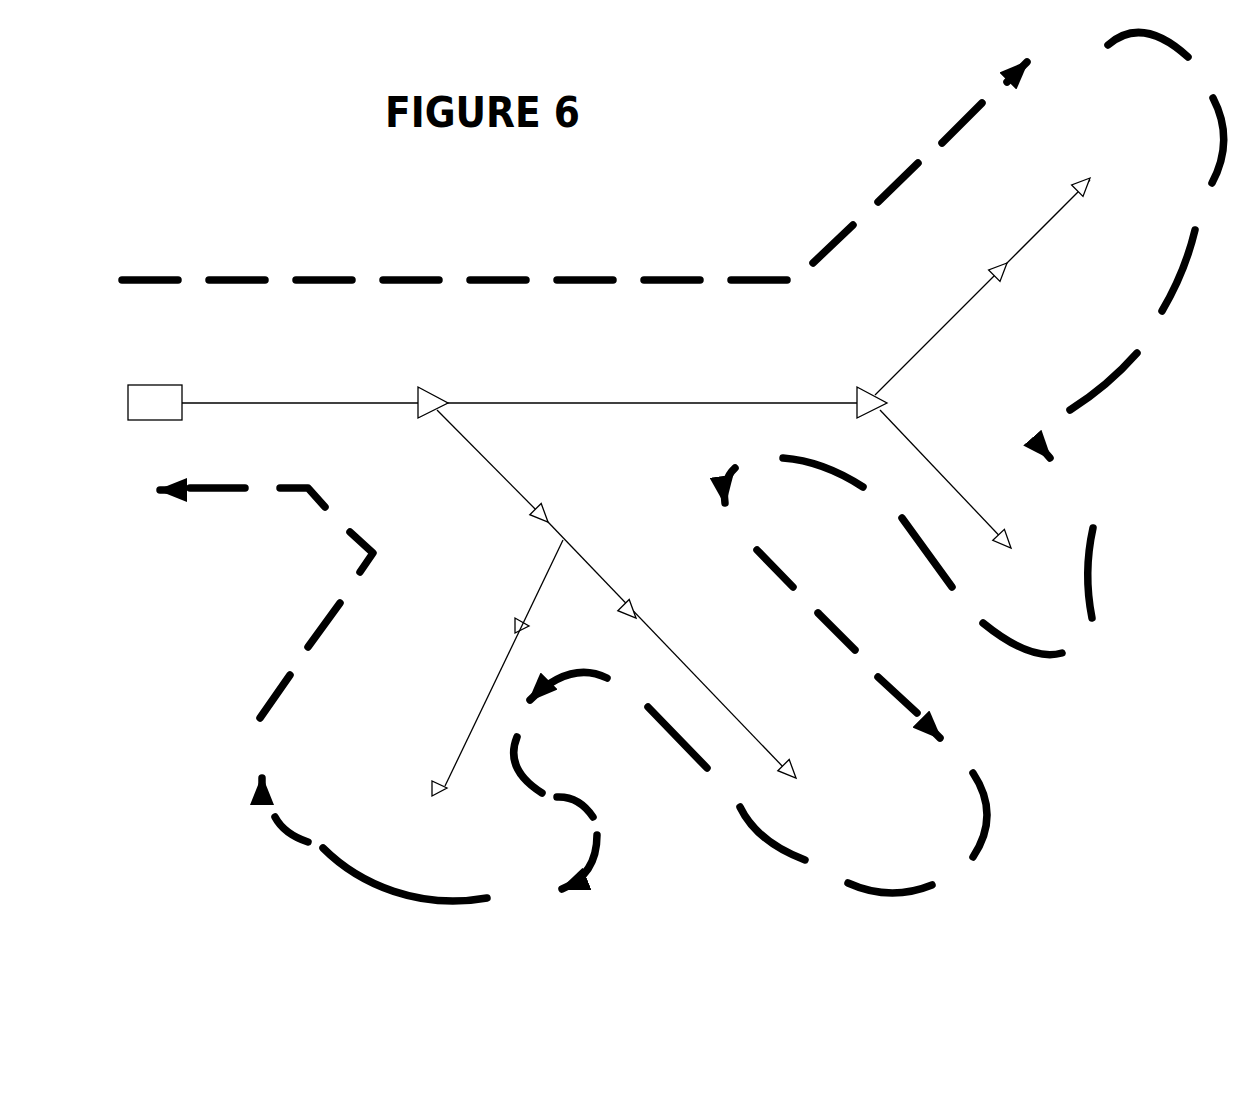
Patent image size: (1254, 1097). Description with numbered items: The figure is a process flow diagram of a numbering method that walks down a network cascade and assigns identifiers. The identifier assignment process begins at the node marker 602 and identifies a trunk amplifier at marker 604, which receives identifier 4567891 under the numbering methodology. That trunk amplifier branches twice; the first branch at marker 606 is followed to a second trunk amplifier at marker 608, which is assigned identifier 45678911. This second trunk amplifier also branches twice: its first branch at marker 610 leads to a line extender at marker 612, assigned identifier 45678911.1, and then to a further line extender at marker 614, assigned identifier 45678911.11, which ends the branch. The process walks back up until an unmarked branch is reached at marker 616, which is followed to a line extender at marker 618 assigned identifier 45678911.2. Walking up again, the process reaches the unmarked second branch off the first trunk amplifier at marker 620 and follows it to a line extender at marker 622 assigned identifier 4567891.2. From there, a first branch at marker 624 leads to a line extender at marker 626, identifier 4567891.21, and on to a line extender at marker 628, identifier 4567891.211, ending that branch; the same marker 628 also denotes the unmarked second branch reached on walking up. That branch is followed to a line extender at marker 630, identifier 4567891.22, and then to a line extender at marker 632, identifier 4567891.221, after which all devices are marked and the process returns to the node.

The node marker 602 is at (155, 368).
The trunk amplifier marker 604 is at (421, 378).
The first branch from trunk amplifier marker 606 is at (524, 392).
The second trunk amplifier marker 608 is at (862, 378).
The first branch from second trunk amplifier marker 610 is at (929, 313).
The line extender marker 612 is at (989, 252).
The line extender marker 614 is at (1064, 170).
The unmarked branch marker 616 is at (954, 463).
The line extender marker 618 is at (1022, 532).
The unmarked branch marker 620 is at (512, 462).
The line extender marker 622 is at (558, 501).
The first branch from line extender marker 624 is at (602, 557).
The line extender marker 626 is at (649, 598).
The line extender marker 628 is at (520, 596).
The line extender marker 630 is at (537, 643).
The line extender marker 632 is at (468, 802).